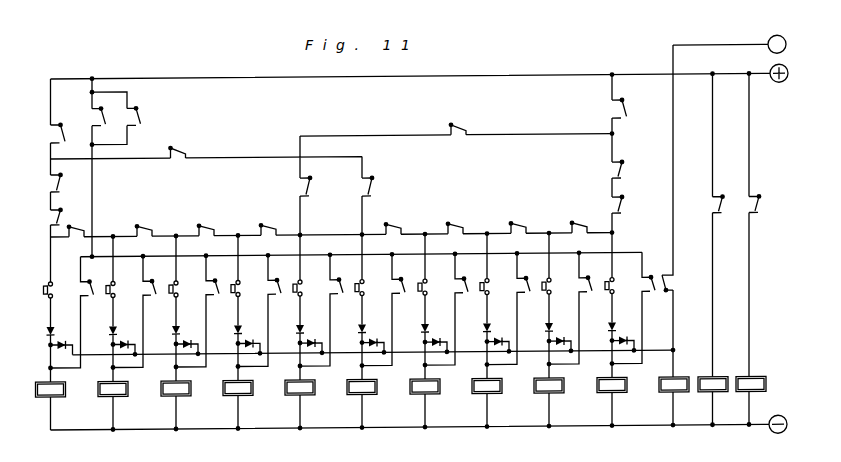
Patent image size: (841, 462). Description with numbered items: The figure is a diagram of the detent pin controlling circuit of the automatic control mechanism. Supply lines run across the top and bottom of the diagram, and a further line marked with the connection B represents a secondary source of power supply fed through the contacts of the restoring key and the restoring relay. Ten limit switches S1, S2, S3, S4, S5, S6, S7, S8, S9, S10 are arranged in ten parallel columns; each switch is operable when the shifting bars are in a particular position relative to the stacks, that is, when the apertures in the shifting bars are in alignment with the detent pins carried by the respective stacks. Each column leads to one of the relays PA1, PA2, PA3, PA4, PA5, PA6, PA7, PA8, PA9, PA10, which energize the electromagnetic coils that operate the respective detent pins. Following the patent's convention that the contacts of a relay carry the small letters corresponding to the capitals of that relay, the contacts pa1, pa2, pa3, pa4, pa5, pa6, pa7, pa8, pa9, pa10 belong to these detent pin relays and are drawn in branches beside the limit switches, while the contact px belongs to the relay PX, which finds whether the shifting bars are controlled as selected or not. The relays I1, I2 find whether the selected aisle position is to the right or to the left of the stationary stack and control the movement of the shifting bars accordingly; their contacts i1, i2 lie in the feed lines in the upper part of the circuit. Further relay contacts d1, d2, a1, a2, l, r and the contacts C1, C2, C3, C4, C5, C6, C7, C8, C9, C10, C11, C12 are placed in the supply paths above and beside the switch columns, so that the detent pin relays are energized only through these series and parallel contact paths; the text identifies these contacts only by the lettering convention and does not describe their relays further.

The connection marking B is at (729, 44).
The contact of relay D d1 is at (67, 135).
The contact of relay D d2 is at (629, 110).
The contact of relay A a1 is at (107, 118).
The contact of relay A a2 is at (143, 118).
The contact of relay I1 i1 is at (260, 152).
The contact of relay I2 i2 is at (402, 156).
The contact C1 is at (66, 212).
The contact C2 is at (78, 225).
The contact C3 is at (147, 225).
The contact C4 is at (213, 225).
The contact C5 is at (270, 224).
The contact C6 is at (315, 188).
The contact C7 is at (377, 188).
The contact C8 is at (399, 224).
The contact C9 is at (459, 224).
The contact C10 is at (525, 224).
The contact C11 is at (587, 221).
The contact C12 is at (630, 207).
The contact of relay L l is at (719, 225).
The contact of relay R r is at (757, 224).
The contact of relay PX px is at (664, 169).
The relay PX is at (674, 384).
The relay I1 is at (713, 384).
The relay I2 is at (751, 383).
The limit switch S1 is at (40, 282).
The limit switch S2 is at (104, 281).
The limit switch S3 is at (167, 281).
The limit switch S4 is at (229, 280).
The limit switch S5 is at (291, 280).
The limit switch S6 is at (353, 280).
The limit switch S7 is at (416, 279).
The limit switch S8 is at (478, 279).
The limit switch S9 is at (540, 278).
The limit switch S10 is at (602, 278).
The contact of relay PA1 pa1 is at (80, 312).
The contact of relay PA2 pa2 is at (142, 311).
The contact of relay PA3 pa3 is at (205, 311).
The contact of relay PA4 pa4 is at (267, 310).
The contact of relay PA5 pa5 is at (329, 310).
The contact of relay PA6 pa6 is at (391, 309).
The contact of relay PA7 pa7 is at (454, 309).
The contact of relay PA8 pa8 is at (516, 308).
The contact of relay PA9 pa9 is at (578, 308).
The contact of relay PA10 pa10 is at (644, 308).
The detent pin relay PA1 is at (51, 389).
The detent pin relay PA2 is at (113, 388).
The detent pin relay PA3 is at (176, 388).
The detent pin relay PA4 is at (238, 387).
The detent pin relay PA5 is at (300, 387).
The detent pin relay PA6 is at (362, 386).
The detent pin relay PA7 is at (425, 386).
The detent pin relay PA8 is at (487, 385).
The detent pin relay PA9 is at (549, 385).
The detent pin relay PA10 is at (613, 384).